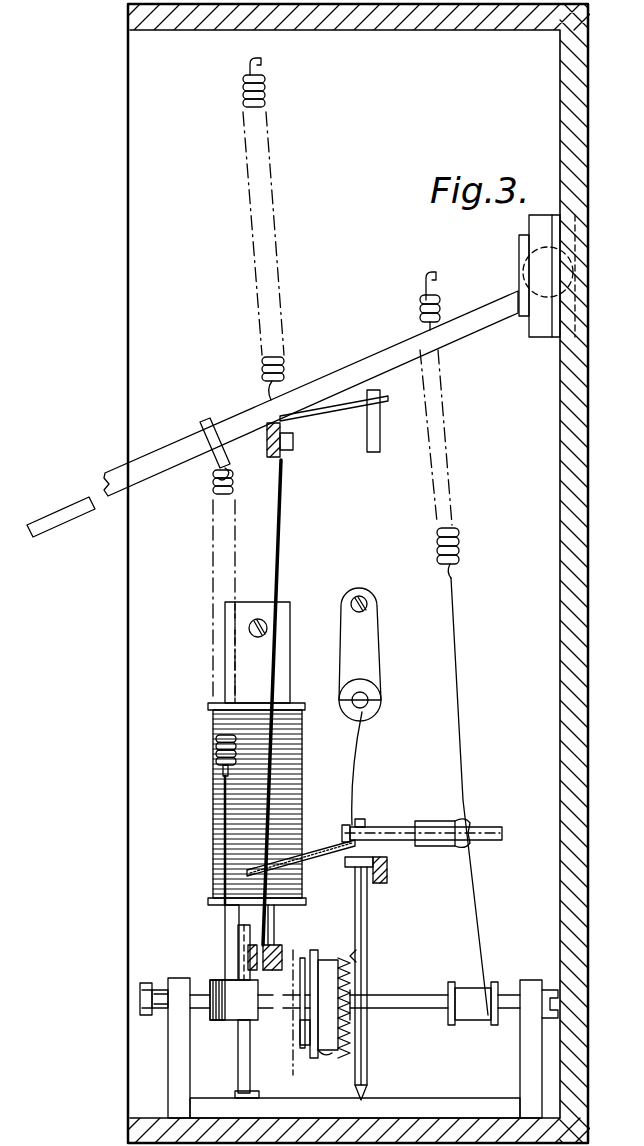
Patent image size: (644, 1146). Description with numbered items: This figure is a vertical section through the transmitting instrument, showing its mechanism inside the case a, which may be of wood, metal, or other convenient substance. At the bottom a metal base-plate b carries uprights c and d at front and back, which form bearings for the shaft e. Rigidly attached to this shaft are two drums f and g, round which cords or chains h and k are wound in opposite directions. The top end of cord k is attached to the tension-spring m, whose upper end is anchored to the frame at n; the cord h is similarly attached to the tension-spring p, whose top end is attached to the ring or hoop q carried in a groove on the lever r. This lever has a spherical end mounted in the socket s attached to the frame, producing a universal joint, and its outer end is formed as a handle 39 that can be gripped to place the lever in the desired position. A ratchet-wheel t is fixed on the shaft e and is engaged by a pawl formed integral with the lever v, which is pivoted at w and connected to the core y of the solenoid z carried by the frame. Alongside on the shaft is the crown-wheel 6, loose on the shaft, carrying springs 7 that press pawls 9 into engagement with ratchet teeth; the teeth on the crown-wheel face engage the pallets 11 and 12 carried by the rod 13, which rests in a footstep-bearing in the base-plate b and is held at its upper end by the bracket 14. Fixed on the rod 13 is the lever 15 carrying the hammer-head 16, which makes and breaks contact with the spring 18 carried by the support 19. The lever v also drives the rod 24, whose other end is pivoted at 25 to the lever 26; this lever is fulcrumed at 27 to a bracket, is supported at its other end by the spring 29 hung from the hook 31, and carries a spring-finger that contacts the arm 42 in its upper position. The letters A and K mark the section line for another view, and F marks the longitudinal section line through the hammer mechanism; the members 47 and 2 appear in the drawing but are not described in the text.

The case a is at (565, 390).
The lever r is at (176, 445).
The handle 39 is at (87, 516).
The hook 31 is at (259, 66).
The spring 29 is at (268, 95).
The anchor point n is at (435, 278).
The socket s is at (530, 222).
The arm 42 is at (378, 396).
The arm 47 is at (336, 412).
The lever 26 is at (268, 452).
The pivot 25 is at (293, 447).
The ring or hoop q is at (207, 420).
The tension-spring p is at (212, 486).
The rod 24 is at (279, 558).
The tension-spring m is at (462, 545).
The cord k is at (458, 675).
The solenoid z is at (303, 768).
The cord h is at (225, 918).
The core y is at (276, 918).
The pivot w is at (304, 956).
The section line point A is at (283, 956).
The spring 7 is at (322, 942).
The crown-wheel 6 is at (336, 1005).
The pawl 9 is at (323, 1055).
The shaft e is at (198, 995).
The lever v is at (244, 1000).
The drum f is at (238, 1012).
The ratchet-wheel t is at (252, 1050).
The foot 2 is at (243, 1060).
The upright c is at (168, 1050).
The base-plate b is at (445, 1112).
The upright d is at (520, 1058).
The drum g is at (471, 1010).
The rod 13 is at (378, 926).
The pallet 12 is at (367, 1052).
The pallet 11 is at (358, 958).
The bracket 14 is at (387, 868).
The lever 15 is at (362, 822).
The hammer-head 16 is at (492, 826).
The section line point F is at (502, 833).
The fulcrum 27 is at (323, 850).
The spring 18 is at (358, 772).
The support 19 is at (381, 700).
The section line point K is at (294, 1076).